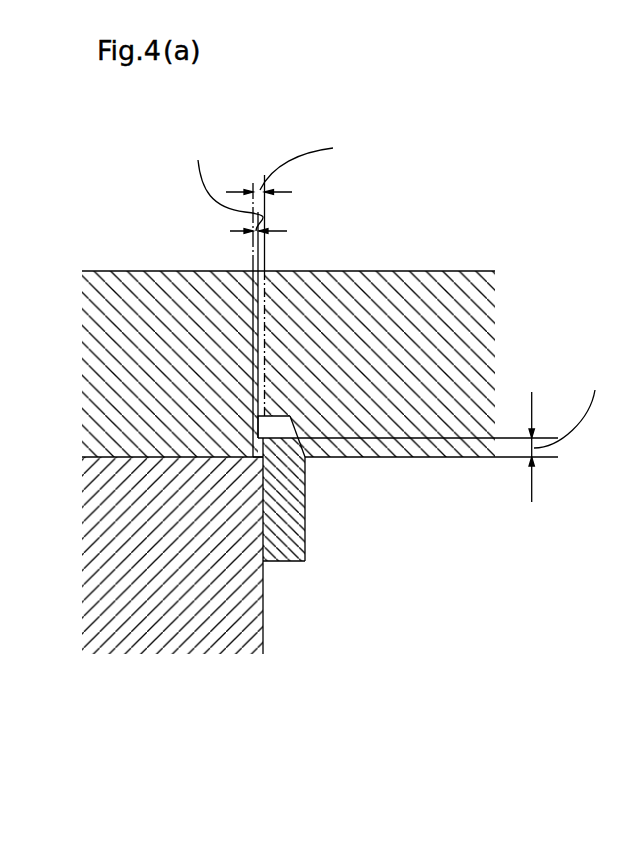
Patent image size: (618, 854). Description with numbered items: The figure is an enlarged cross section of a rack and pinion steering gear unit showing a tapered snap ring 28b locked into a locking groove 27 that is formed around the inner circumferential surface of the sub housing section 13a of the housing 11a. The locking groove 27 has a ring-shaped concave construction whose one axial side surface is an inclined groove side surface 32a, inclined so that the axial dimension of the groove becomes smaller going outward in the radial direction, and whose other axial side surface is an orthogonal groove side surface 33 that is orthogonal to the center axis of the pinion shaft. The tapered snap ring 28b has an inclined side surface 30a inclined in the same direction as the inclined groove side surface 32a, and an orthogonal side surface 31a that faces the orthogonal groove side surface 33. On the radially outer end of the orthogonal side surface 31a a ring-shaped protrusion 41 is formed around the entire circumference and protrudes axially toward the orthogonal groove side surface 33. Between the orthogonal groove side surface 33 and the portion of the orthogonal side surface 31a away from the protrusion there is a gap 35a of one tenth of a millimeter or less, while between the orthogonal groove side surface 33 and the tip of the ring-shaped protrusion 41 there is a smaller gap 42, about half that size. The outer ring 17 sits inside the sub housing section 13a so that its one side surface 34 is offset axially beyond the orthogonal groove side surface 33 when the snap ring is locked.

The housing 11a is at (460, 270).
The sub housing section 13a is at (122, 286).
The outer ring 17 is at (103, 566).
The locking groove 27 is at (282, 416).
The tapered snap ring 28b is at (311, 562).
The inclined side surface 30a is at (305, 460).
The orthogonal side surface 31a is at (263, 559).
The inclined groove side surface 32a is at (292, 424).
The orthogonal groove side surface 33 is at (256, 440).
The one side surface 34 is at (264, 600).
The gap 35a is at (262, 459).
The ring-shaped protrusion 41 is at (256, 416).
The gap 42 is at (250, 456).